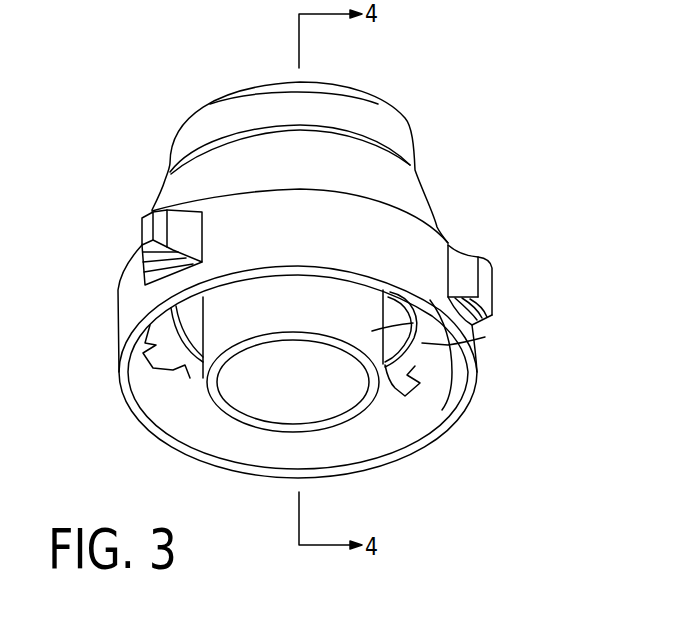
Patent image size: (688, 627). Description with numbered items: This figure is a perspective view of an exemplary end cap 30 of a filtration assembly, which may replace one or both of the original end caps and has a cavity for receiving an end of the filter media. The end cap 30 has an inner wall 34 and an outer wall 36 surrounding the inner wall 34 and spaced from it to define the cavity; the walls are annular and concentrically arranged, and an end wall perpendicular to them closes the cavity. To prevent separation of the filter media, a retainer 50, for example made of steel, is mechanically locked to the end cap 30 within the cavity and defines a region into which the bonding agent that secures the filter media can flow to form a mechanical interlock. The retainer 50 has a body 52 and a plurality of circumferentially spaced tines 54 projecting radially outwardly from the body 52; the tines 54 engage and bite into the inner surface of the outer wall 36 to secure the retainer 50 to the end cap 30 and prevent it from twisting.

The end cap 30 is at (455, 217).
The inner wall 34 is at (413, 323).
The outer wall 36 is at (130, 305).
The retainer 50 is at (186, 367).
The body 52 is at (448, 345).
The tine 54 is at (405, 396).